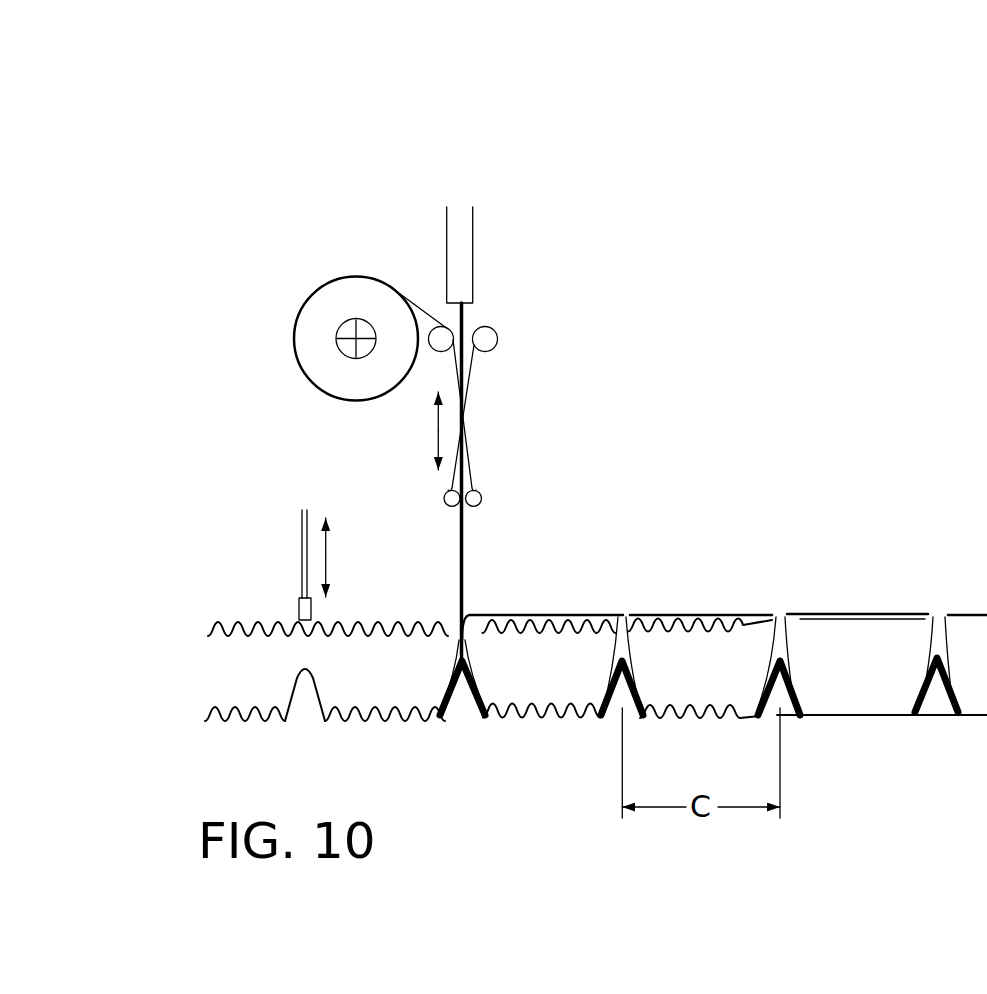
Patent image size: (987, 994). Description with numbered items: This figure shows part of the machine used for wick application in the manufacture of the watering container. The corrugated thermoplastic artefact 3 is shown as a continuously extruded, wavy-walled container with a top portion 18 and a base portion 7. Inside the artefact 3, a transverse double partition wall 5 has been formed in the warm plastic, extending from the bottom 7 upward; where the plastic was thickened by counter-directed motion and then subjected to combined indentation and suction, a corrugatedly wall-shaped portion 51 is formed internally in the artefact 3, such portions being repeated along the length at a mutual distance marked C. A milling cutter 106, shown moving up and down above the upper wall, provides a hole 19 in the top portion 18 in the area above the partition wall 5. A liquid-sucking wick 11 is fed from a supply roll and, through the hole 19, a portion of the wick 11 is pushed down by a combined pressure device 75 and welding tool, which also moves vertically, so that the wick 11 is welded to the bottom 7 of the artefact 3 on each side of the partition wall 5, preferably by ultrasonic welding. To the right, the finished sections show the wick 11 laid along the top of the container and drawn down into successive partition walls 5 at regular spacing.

The water-collecting container 3 is at (225, 620).
The transverse double partition wall 5 is at (463, 708).
The base portion 7 is at (532, 722).
The liquid-sucking wick 11 is at (333, 282).
The top portion 18 is at (358, 618).
The hole 19 is at (469, 609).
The corrugatedly wall-shaped portion 51 is at (287, 692).
The combined pressure device and welding tool 75 is at (474, 437).
The milling cutter 106 is at (295, 598).